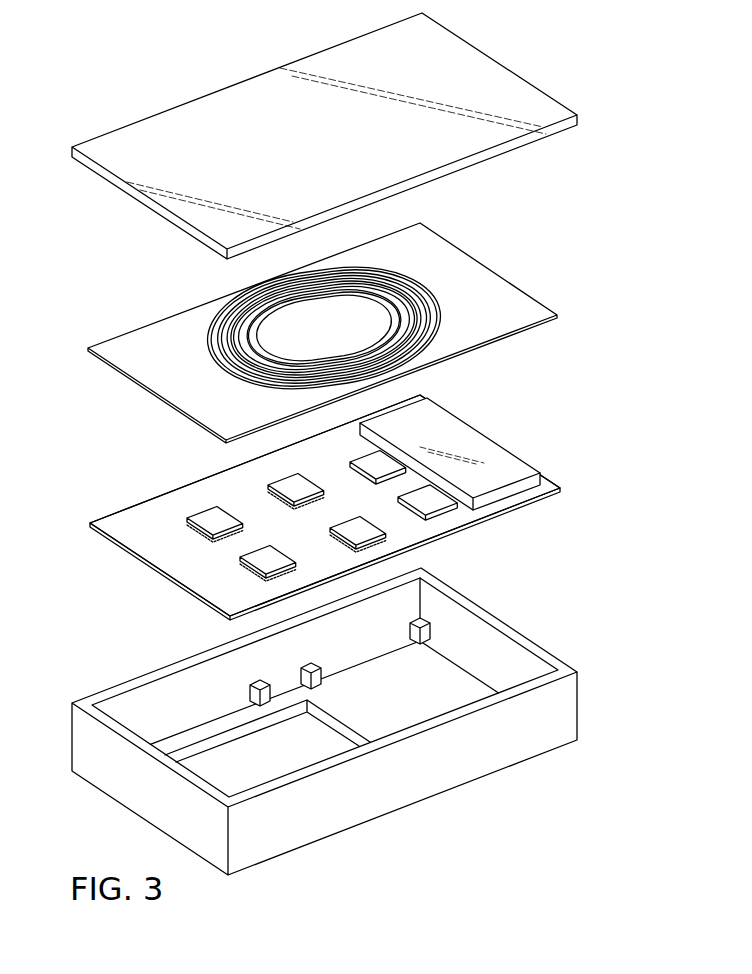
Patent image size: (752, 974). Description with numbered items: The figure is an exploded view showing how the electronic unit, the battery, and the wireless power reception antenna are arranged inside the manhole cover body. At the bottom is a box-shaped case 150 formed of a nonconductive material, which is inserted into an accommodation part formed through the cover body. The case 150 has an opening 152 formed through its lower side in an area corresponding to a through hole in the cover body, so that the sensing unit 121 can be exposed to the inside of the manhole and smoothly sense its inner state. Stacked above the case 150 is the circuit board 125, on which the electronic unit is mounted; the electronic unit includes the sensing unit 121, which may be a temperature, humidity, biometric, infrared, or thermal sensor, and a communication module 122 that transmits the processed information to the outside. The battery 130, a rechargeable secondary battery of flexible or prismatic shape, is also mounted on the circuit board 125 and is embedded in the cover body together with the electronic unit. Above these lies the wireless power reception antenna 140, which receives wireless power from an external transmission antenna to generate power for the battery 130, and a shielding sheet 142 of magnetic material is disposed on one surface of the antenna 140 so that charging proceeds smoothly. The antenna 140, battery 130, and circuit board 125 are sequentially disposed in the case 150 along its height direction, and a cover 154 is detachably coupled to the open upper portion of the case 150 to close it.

The sensing unit 121 is at (192, 535).
The communication module 122 is at (385, 463).
The circuit board 125 is at (522, 510).
The battery 130 is at (492, 465).
The wireless power reception antenna 140 is at (440, 258).
The shielding sheet 142 is at (508, 305).
The case 150 is at (352, 721).
The opening 152 is at (343, 727).
The cover 154 is at (503, 82).